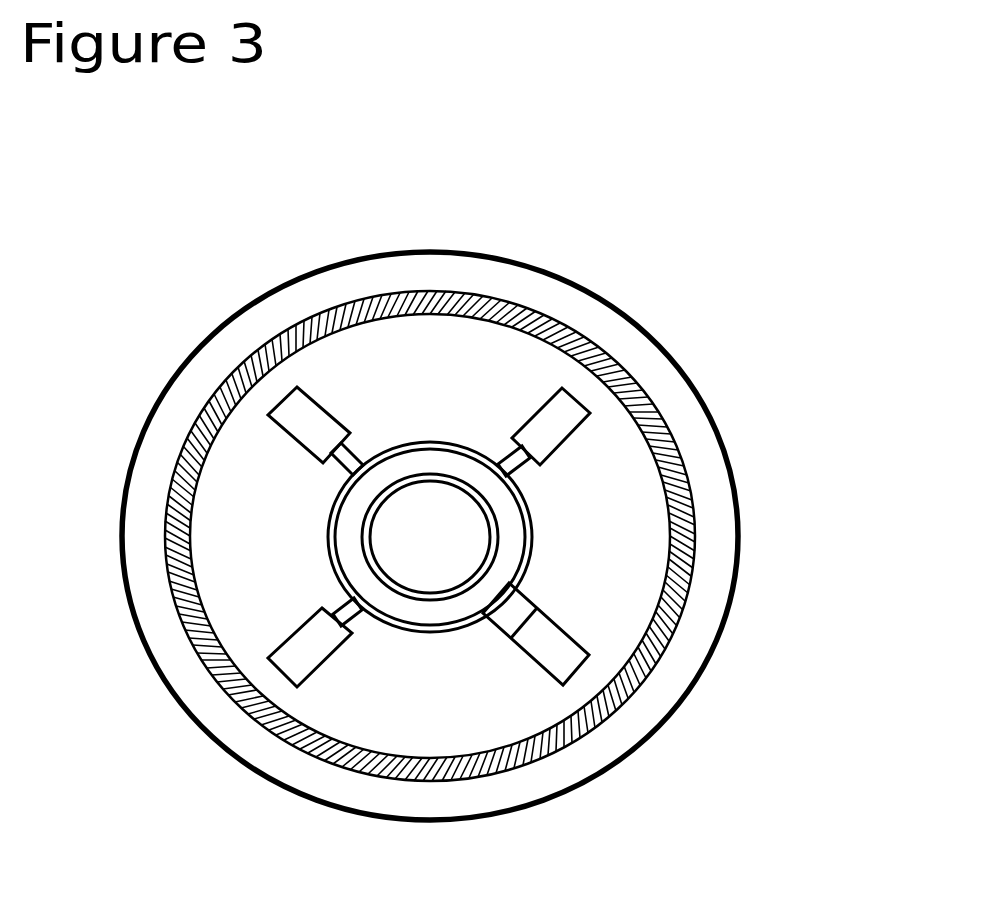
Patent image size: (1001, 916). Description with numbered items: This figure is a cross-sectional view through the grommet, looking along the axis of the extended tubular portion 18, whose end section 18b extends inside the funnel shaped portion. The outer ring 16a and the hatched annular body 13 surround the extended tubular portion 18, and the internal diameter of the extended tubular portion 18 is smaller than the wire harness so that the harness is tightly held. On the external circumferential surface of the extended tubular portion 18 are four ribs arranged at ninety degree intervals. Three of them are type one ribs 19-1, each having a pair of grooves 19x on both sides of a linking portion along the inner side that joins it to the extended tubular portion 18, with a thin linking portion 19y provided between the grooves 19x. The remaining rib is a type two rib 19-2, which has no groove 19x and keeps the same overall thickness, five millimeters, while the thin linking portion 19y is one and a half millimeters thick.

The stator body 13 is at (247, 592).
The outer casing 16a is at (643, 318).
The extended tubular portion 18 is at (500, 563).
The end section 18b is at (533, 537).
The type one rib 19-1 is at (290, 404).
The type two rib 19-2 is at (570, 657).
The groove 19x is at (353, 460).
The thin linking portion 19y is at (520, 455).